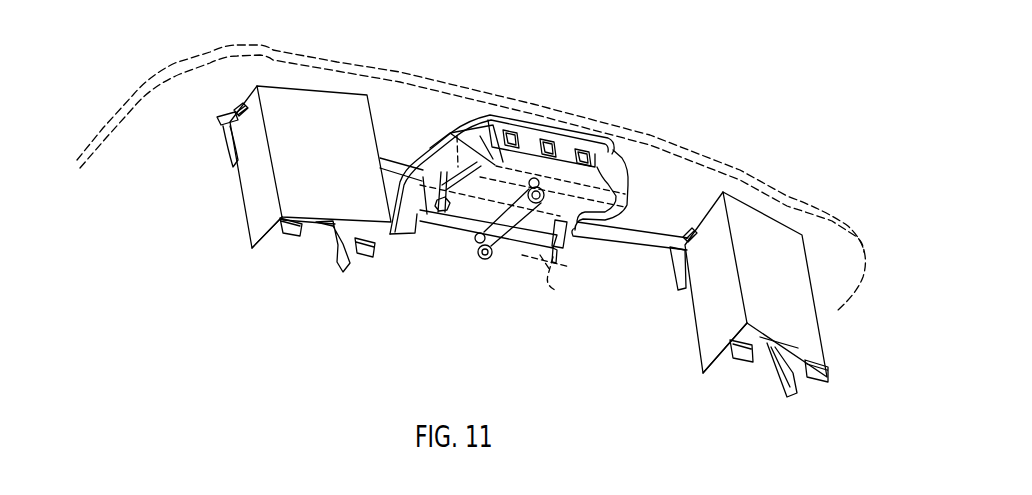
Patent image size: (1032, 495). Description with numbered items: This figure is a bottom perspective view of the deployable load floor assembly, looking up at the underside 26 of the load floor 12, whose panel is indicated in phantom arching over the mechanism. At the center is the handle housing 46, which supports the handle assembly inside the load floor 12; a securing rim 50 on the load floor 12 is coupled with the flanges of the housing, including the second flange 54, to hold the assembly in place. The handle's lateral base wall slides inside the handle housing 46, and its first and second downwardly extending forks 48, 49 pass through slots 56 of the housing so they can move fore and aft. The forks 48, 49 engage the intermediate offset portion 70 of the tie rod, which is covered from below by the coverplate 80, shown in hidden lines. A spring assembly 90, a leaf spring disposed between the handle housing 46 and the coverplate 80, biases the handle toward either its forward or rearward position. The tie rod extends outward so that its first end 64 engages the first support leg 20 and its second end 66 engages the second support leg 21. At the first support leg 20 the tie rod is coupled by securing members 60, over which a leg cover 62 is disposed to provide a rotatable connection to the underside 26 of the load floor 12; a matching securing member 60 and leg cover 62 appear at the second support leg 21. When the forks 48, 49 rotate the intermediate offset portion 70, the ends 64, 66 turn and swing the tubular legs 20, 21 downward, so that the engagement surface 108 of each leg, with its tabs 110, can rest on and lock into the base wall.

The load floor 12 is at (335, 58).
The underside of the load floor 26 is at (123, 143).
The first support leg 20 is at (258, 193).
The second support leg 21 is at (708, 327).
The engagement surface 108 is at (258, 248).
The tabs 110 is at (367, 258).
The securing members 60 is at (241, 107).
The leg cover 62 is at (220, 133).
The first end of the tie rod 64 is at (384, 158).
The second end of the tie rod 66 is at (637, 238).
The securing rim 50 is at (538, 116).
The second flange 54 is at (620, 160).
The handle housing 46 is at (435, 238).
The slots 56 is at (437, 222).
The first downwardly extending fork 48 is at (465, 202).
The spring assembly 90 is at (541, 212).
The intermediate offset portion 70 is at (548, 262).
The coverplate 80 is at (553, 257).
The second downwardly extending fork 49 is at (583, 233).